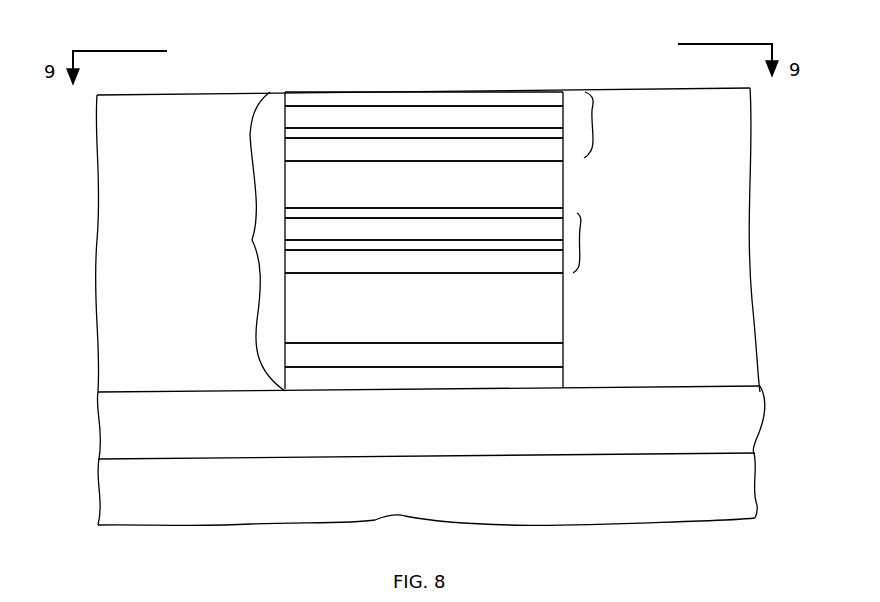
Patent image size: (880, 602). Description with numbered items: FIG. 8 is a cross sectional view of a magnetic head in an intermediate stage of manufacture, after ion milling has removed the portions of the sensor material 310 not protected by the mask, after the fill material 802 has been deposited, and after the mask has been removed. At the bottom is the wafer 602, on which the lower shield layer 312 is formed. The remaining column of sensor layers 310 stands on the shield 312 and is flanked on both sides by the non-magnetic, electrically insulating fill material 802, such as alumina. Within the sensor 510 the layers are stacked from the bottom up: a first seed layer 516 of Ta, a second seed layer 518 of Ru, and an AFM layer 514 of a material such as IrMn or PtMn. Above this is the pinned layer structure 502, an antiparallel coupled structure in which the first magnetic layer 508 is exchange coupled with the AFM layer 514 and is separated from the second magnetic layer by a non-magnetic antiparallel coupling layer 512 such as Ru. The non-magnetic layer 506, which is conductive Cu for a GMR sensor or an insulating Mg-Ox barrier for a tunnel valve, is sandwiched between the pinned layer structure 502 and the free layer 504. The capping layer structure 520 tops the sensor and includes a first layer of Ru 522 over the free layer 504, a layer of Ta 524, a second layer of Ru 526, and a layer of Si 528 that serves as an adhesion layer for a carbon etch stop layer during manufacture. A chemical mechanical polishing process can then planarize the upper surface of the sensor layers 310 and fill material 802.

The fill material 802 is at (191, 254).
The sensor 310 is at (252, 120).
The lower shield layer 312 is at (459, 421).
The wafer 602 is at (470, 480).
The pinned layer structure 502 is at (580, 222).
The capping layer structure 520 is at (592, 110).
The layer of Si 528 is at (485, 97).
The second layer of Ru 526 is at (454, 116).
The layer of Ta 524 is at (488, 130).
The first layer of Ru 522 is at (454, 150).
The free layer 504 is at (455, 184).
The non-magnetic layer 506 is at (479, 210).
The sensor 510 is at (454, 228).
The antiparallel coupling layer 512 is at (483, 245).
The first magnetic layer (AP1) 508 is at (454, 262).
The AFM layer 514 is at (455, 317).
The second seed layer 518 is at (454, 354).
The first seed layer 516 is at (456, 376).